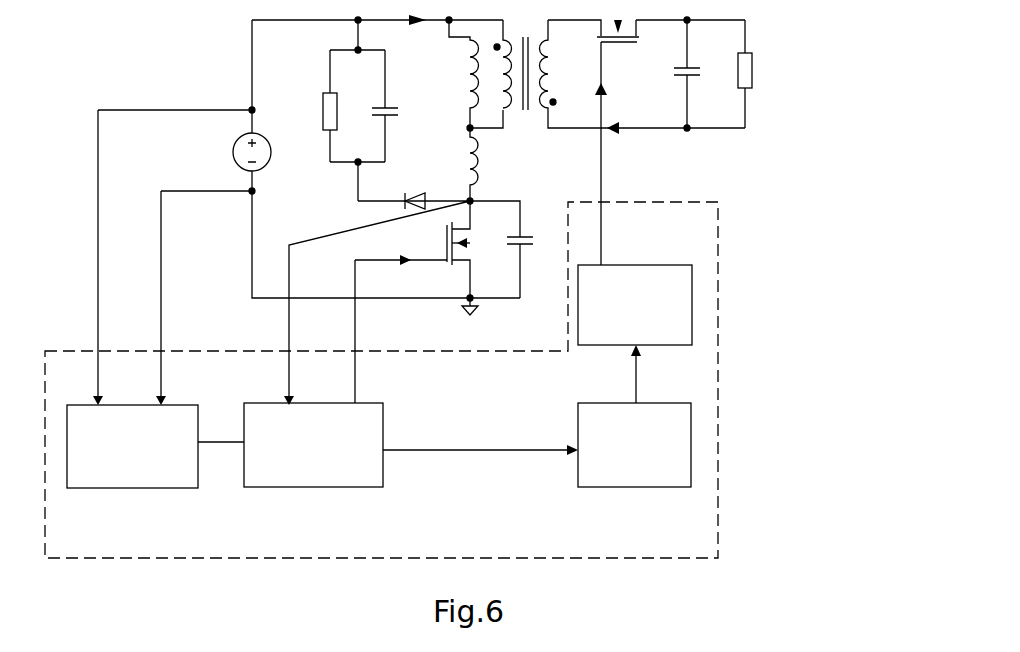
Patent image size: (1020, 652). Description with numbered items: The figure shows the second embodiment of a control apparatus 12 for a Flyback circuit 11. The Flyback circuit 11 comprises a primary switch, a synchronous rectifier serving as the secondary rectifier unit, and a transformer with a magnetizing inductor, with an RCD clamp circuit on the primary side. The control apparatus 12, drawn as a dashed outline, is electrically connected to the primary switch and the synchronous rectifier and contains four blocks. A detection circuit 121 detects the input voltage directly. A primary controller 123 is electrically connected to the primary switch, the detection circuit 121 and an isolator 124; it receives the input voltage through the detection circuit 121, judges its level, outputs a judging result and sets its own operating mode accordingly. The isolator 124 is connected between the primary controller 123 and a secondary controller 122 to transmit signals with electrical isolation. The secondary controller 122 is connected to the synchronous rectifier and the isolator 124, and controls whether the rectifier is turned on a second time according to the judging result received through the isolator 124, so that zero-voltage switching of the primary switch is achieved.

The Flyback circuit 11 is at (225, 68).
The control apparatus 12 is at (718, 203).
The detection circuit 121 is at (198, 485).
The secondary controller 122 is at (692, 343).
The primary controller 123 is at (383, 465).
The isolator 124 is at (691, 403).